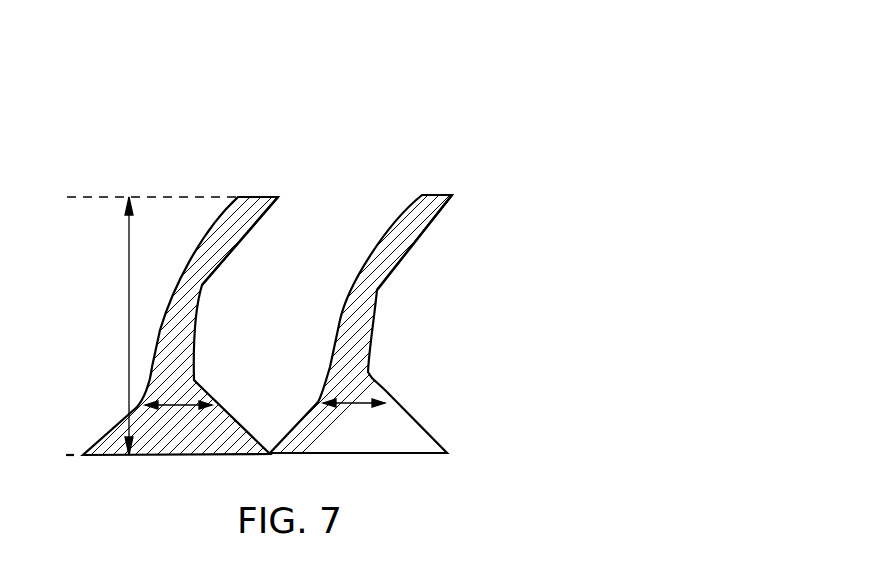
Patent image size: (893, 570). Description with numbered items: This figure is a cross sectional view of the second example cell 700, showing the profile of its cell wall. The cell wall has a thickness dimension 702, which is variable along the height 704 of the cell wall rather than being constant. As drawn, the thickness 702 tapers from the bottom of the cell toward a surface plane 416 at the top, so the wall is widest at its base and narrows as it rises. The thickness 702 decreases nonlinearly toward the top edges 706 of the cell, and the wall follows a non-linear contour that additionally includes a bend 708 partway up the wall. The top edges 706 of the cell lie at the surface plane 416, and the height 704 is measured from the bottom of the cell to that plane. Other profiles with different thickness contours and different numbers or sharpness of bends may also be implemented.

The second example cell 700 is at (517, 114).
The thickness dimension 702 is at (200, 386).
The height 704 is at (127, 340).
The top edges 706 is at (438, 195).
The bend 708 is at (202, 285).
The surface plane 416 is at (162, 195).